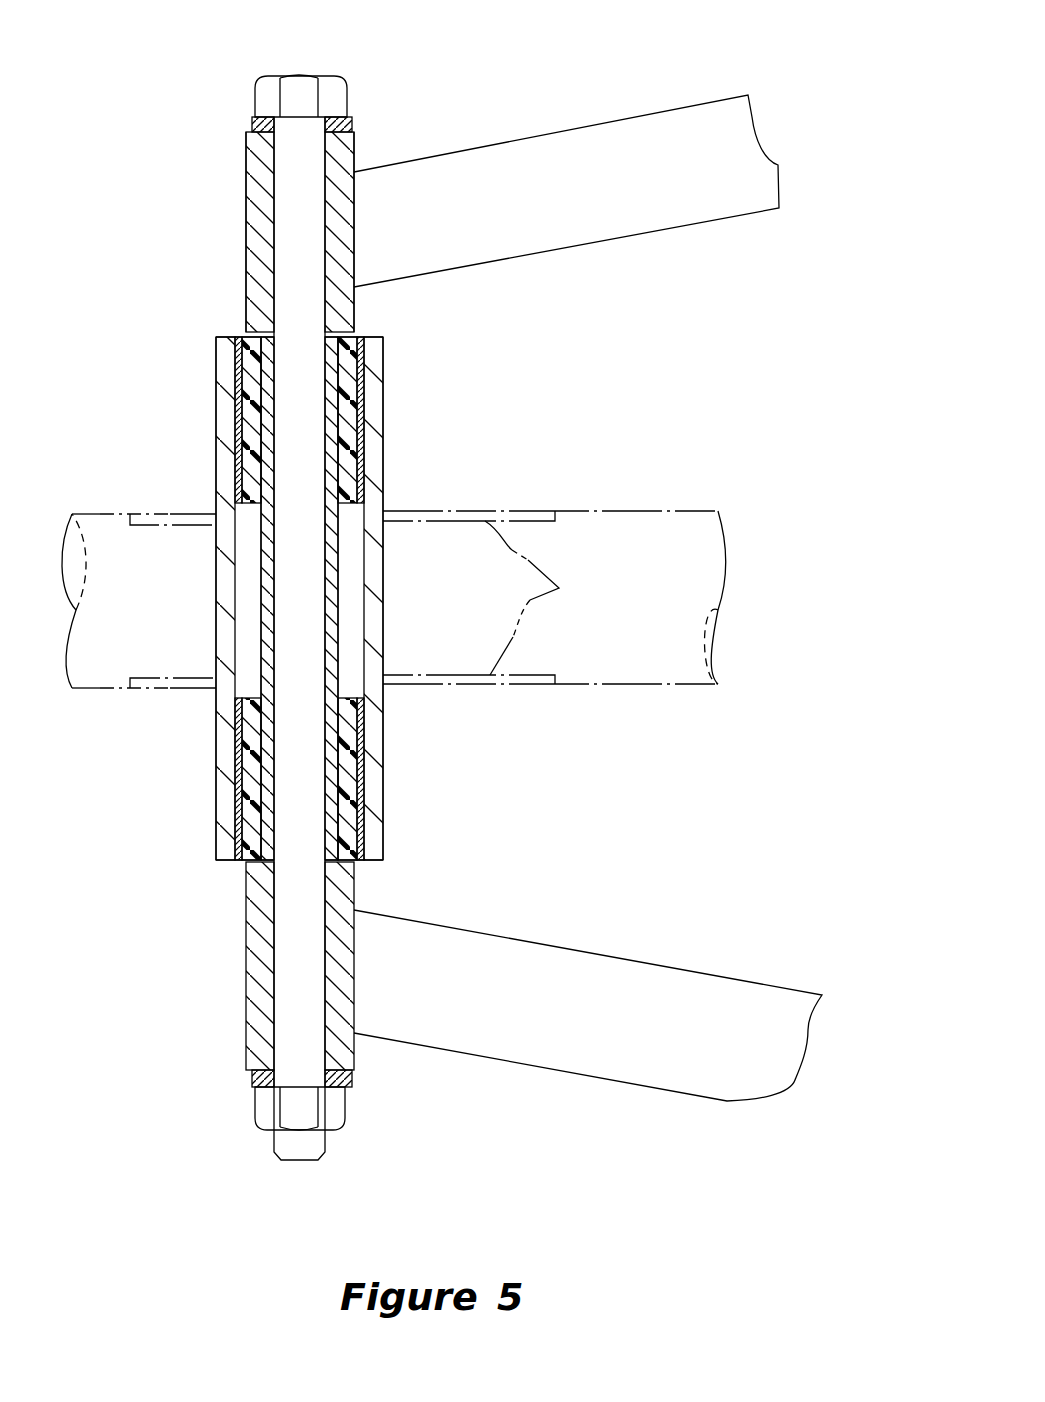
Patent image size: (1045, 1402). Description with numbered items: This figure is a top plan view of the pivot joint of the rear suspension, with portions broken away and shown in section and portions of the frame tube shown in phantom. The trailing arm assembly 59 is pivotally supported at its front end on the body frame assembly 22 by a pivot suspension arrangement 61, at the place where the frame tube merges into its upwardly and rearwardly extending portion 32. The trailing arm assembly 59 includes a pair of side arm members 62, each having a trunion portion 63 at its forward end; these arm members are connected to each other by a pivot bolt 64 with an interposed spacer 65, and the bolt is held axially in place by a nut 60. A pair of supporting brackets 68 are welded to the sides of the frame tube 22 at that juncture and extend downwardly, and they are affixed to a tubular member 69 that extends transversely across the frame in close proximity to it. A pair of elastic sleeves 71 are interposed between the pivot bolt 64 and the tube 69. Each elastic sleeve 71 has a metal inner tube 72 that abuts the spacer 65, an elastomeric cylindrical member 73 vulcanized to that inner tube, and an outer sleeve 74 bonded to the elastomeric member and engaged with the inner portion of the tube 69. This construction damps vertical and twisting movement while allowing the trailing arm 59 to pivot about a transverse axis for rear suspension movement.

The body frame assembly 22 is at (700, 690).
The extending portion 32 is at (638, 511).
The trailing arm assembly 59 is at (466, 111).
The nut 60 is at (258, 1103).
The pivot suspension arrangement 61 is at (195, 418).
The side arm members 62 is at (577, 128).
The trunion portion 63 is at (247, 210).
The pivot bolt 64 is at (292, 277).
The spacer 65 is at (262, 596).
The supporting brackets 68 is at (546, 598).
The tubular member 69 is at (383, 428).
The elastic sleeves 71 is at (232, 370).
The inner tube 72 is at (323, 437).
The elastomeric cylindrical member 73 is at (349, 466).
The outer sleeve 74 is at (363, 363).